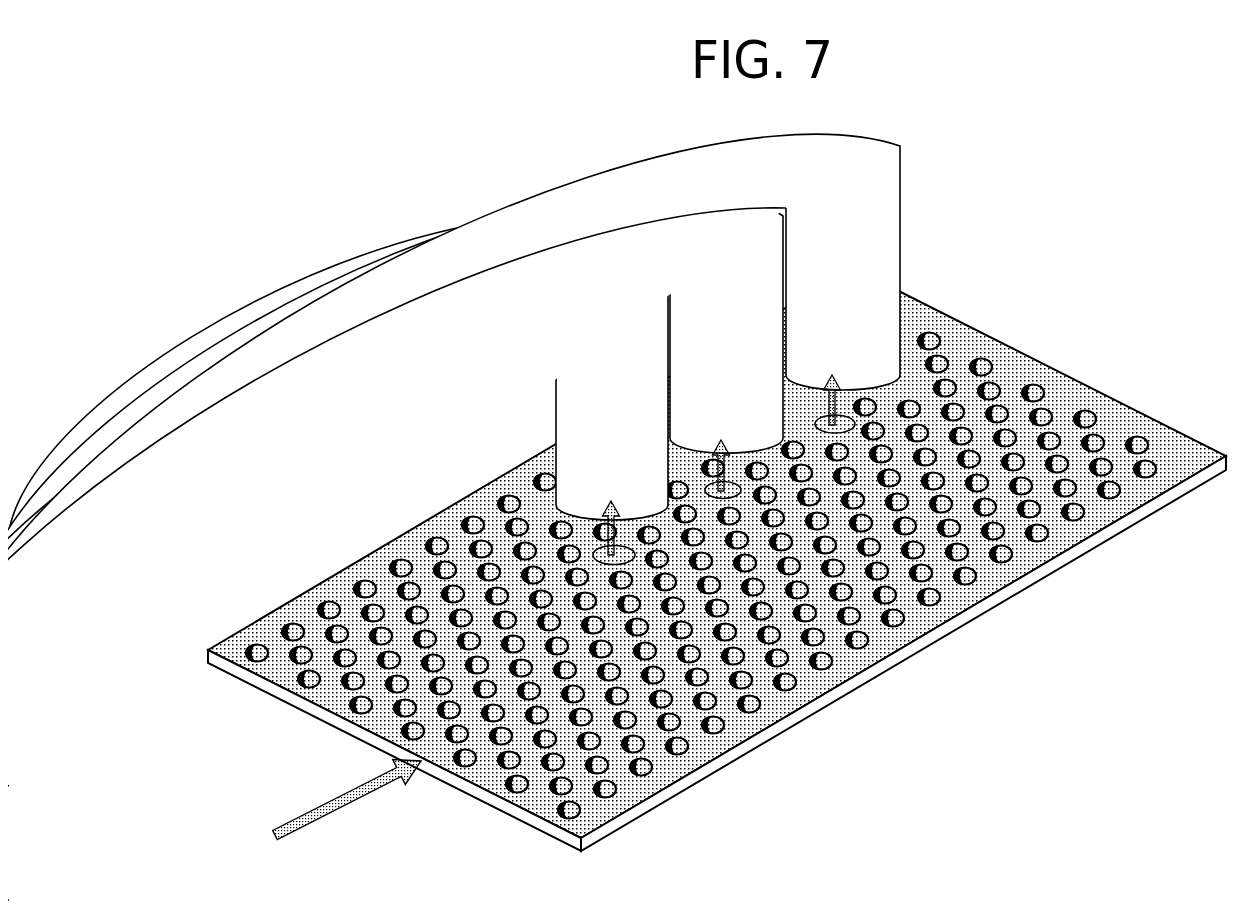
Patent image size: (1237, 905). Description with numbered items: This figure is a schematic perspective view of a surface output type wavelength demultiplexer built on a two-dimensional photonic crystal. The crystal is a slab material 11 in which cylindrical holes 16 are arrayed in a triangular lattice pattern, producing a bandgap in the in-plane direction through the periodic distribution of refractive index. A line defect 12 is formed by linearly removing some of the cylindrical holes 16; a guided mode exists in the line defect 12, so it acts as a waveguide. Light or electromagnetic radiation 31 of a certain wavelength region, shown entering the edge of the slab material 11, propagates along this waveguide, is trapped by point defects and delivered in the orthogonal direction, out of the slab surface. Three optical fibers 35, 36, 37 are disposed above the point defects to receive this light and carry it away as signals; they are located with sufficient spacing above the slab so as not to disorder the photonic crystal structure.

The slab material 11 is at (922, 637).
The line defect 12 is at (997, 397).
The cylindrical holes 16 is at (598, 778).
The light or electromagnetic radiation 31 is at (313, 800).
The optical fiber 35 is at (553, 392).
The optical fiber 36 is at (707, 233).
The optical fiber 37 is at (885, 228).